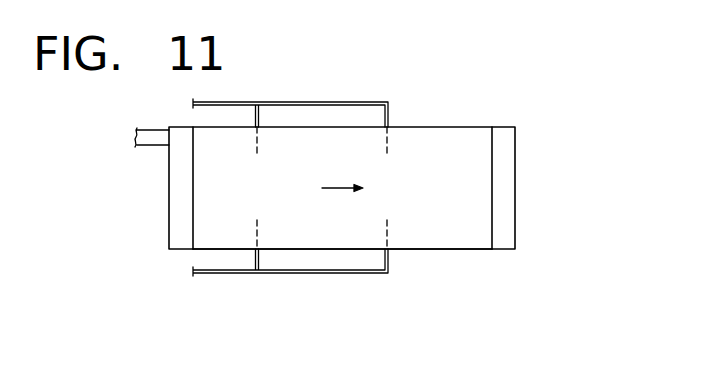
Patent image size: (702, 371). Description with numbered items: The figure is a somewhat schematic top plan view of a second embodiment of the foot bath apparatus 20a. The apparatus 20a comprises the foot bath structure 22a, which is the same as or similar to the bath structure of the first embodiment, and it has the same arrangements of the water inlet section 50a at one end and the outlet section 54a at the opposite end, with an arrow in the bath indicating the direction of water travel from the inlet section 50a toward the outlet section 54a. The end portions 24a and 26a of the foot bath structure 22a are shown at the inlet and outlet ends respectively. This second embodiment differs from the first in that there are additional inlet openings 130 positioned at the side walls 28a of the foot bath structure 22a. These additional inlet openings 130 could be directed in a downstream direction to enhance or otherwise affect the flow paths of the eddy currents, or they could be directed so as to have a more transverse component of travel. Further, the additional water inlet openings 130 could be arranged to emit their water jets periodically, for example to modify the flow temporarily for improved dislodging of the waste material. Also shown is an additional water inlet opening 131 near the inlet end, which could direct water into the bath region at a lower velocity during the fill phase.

The apparatus 20a is at (419, 106).
The foot bath structure 22a is at (442, 127).
The first end portion 24a is at (168, 178).
The second end portion 26a is at (515, 180).
The side walls 28a is at (450, 250).
The water inlet section 50a is at (158, 230).
The outlet section 54a is at (525, 212).
The additional inlet openings 130 is at (377, 115).
The additional water inlet opening 131 is at (153, 132).